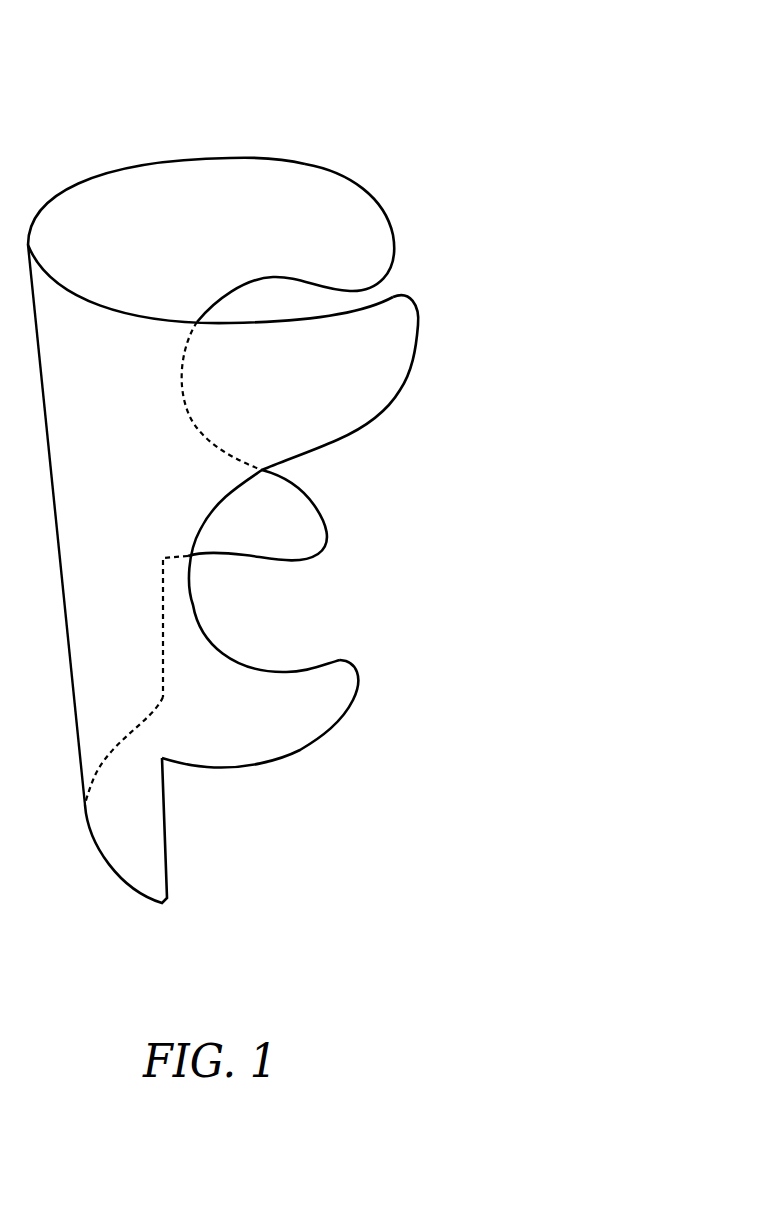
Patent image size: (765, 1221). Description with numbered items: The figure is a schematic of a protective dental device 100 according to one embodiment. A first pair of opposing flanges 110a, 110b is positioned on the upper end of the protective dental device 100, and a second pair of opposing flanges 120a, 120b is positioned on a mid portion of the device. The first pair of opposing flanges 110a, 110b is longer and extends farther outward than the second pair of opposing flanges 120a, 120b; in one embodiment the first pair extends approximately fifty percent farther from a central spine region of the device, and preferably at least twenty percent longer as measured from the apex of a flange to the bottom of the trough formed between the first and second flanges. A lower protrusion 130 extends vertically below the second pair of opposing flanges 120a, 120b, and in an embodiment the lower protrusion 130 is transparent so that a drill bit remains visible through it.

The protective dental device 100 is at (233, 87).
The first opposing flange 110a is at (355, 237).
The first opposing flange 110b is at (400, 322).
The second opposing flange 120a is at (297, 533).
The second opposing flange 120b is at (332, 693).
The lower protrusion 130 is at (153, 860).